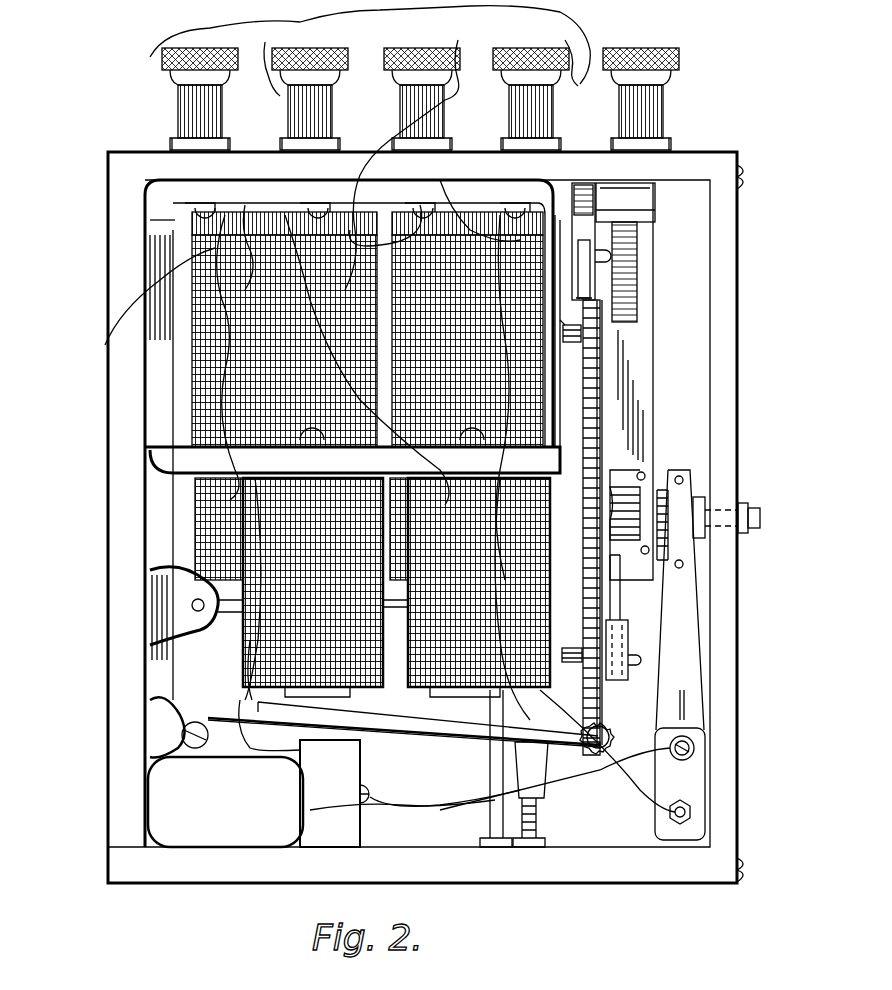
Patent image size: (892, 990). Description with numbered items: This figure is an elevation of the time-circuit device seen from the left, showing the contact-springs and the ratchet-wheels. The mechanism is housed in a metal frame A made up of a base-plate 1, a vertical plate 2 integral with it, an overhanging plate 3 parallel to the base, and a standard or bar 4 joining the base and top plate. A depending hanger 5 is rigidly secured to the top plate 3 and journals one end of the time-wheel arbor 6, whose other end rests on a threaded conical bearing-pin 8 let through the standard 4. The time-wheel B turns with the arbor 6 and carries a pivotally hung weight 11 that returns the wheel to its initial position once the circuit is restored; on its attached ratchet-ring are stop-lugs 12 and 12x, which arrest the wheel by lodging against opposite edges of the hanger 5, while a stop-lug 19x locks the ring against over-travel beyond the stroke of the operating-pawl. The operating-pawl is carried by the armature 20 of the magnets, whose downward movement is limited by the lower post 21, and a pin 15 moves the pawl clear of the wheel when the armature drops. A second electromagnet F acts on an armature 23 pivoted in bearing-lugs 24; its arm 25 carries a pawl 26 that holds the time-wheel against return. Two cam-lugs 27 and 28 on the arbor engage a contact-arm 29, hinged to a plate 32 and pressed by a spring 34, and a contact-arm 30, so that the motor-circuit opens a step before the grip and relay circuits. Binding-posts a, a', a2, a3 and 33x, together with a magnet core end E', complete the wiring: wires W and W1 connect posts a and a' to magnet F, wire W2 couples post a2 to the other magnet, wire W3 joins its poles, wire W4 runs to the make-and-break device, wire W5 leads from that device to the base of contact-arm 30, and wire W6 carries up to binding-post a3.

The base-plate 1 is at (575, 885).
The vertical plate 2 is at (120, 565).
The overhanging plate 3 is at (162, 160).
The standard or bar 4 is at (722, 392).
The depending arm or hanger 5 is at (561, 331).
The time-wheel shaft or arbor 6 is at (700, 495).
The conical bearing-pin 8 is at (752, 530).
The weight 11 is at (620, 640).
The stop-lug 12 is at (567, 322).
The stop-lug 12x is at (567, 642).
The pin 15 is at (626, 806).
The stop-lug 19x is at (579, 241).
The armature 20 is at (402, 607).
The lower post 21 is at (490, 786).
The armature 23 is at (438, 735).
The ears or bearing-lugs 24 is at (172, 745).
The arm 25 is at (608, 730).
The pawl 26 is at (586, 740).
The cam-lug 27 is at (665, 488).
The cam-lug 28 is at (705, 497).
The contact-arm 29 is at (638, 396).
The contact-arm 30 is at (680, 600).
The plate 32 is at (637, 218).
The spring 34 is at (626, 290).
The binding-post 33x is at (650, 99).
The binding-post a is at (200, 99).
The binding-post a' is at (312, 99).
The binding-post a2 is at (418, 112).
The binding-post a3 is at (529, 112).
The frame A is at (288, 793).
The time-wheel B is at (592, 350).
The magnet core end E' is at (162, 221).
The electromagnet F is at (242, 640).
The wire W is at (232, 452).
The wire W1 is at (435, 456).
The wire W2 is at (477, 196).
The wire W3 is at (360, 221).
The wire W4 is at (250, 230).
The wire W5 is at (445, 803).
The wire W6 is at (557, 751).